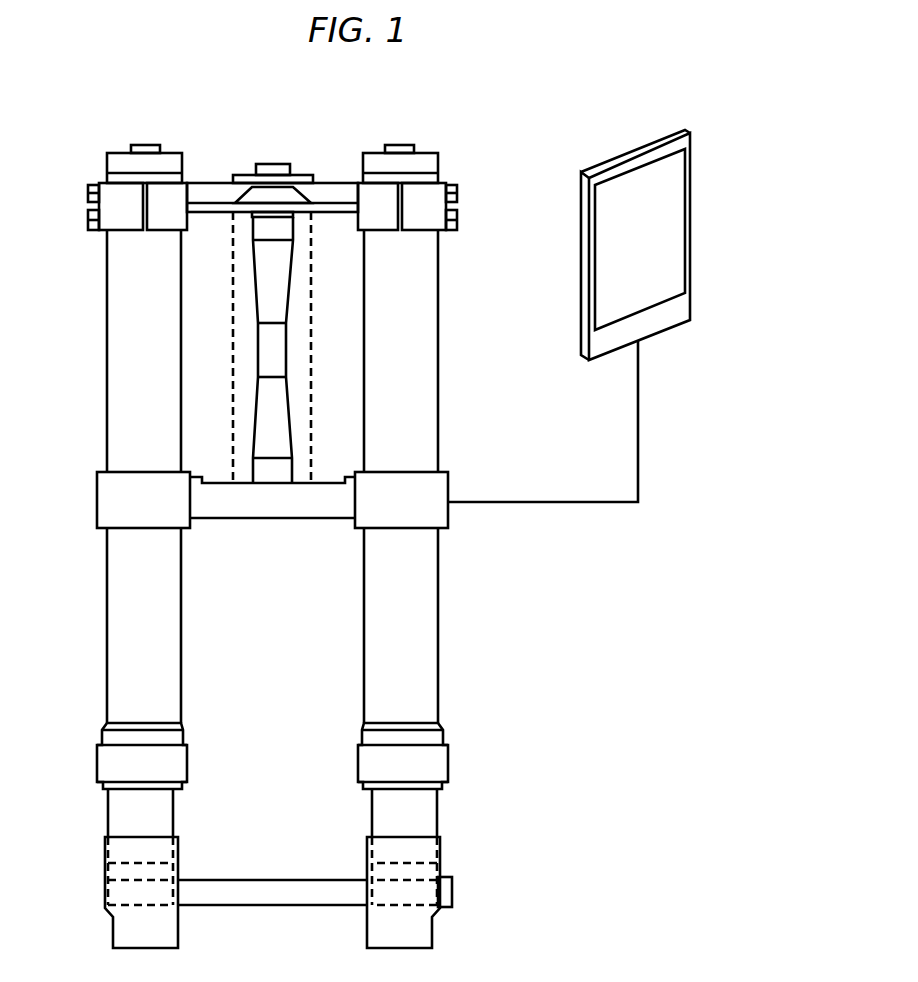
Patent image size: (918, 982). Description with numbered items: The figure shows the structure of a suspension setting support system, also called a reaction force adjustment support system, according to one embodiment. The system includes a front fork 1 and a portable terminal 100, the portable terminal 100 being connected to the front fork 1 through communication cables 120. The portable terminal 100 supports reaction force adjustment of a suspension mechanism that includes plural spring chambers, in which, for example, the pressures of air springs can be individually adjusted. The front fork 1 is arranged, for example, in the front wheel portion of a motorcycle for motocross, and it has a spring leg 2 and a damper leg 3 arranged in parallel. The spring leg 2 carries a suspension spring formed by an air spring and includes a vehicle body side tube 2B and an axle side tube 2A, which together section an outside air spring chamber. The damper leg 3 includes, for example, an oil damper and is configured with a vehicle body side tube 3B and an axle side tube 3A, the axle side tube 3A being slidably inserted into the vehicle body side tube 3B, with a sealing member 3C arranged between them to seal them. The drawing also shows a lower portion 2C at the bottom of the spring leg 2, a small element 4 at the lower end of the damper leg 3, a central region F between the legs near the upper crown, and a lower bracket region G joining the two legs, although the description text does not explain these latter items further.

The front fork 1 is at (149, 114).
The spring leg 2 is at (90, 345).
The damper leg 3 is at (452, 346).
The axle side tube 2A is at (108, 812).
The axle side tube 3A is at (437, 812).
The vehicle body side tube 2B is at (107, 627).
The vehicle body side tube 3B is at (438, 627).
The left axle bracket 2C is at (105, 872).
The sealing member 3C is at (438, 863).
The sensor 4 is at (452, 888).
The portable terminal 100 is at (632, 150).
The communication cables 120 is at (590, 500).
The steering stem F is at (313, 257).
The lower bracket G is at (327, 483).